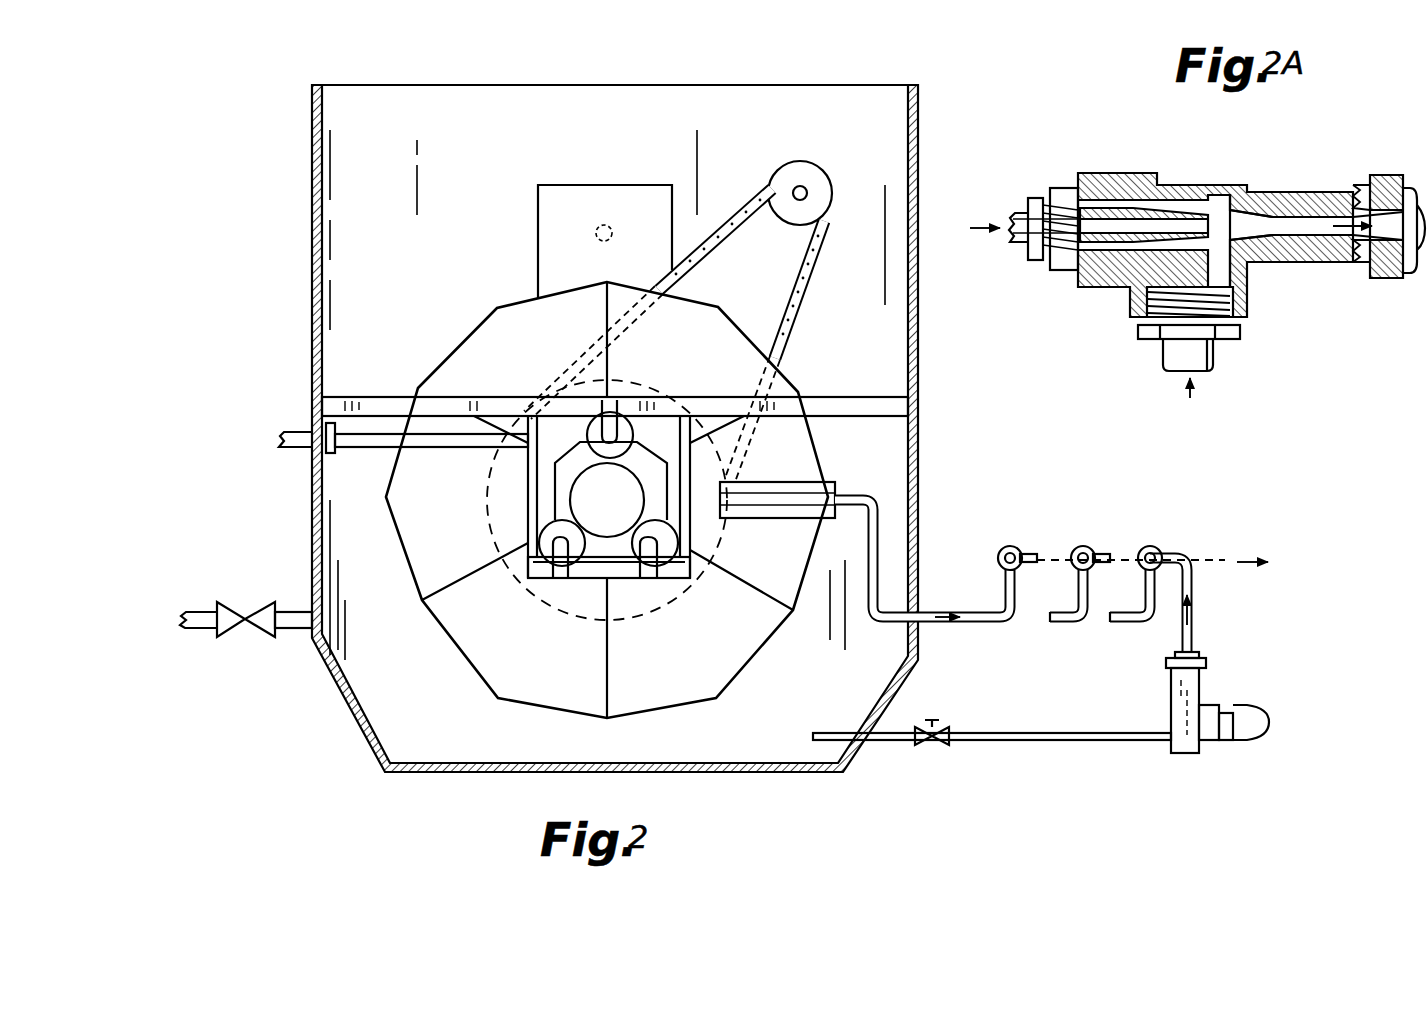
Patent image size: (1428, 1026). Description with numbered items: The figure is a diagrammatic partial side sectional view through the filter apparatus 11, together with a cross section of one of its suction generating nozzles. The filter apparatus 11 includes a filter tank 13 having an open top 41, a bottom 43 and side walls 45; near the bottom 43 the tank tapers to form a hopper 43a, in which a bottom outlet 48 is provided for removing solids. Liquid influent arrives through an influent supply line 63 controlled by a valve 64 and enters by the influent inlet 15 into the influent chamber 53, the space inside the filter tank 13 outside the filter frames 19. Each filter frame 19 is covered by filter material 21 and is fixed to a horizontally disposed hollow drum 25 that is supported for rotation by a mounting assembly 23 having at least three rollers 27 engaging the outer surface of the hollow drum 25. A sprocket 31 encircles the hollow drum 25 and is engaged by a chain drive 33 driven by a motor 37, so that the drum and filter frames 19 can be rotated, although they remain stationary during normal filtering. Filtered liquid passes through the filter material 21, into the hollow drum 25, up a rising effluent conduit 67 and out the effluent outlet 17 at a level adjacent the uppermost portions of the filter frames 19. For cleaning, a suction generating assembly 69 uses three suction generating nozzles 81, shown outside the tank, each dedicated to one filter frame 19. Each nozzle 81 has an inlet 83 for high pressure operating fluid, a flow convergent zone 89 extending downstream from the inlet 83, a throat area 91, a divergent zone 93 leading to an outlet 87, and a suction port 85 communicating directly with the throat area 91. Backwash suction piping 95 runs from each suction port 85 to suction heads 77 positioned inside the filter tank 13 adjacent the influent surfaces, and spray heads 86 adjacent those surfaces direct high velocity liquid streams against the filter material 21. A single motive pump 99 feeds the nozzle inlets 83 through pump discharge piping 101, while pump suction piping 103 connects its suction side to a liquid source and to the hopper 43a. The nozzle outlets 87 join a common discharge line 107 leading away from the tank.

In FIG. 2, the filter apparatus 11 is at (212, 178).
In FIG. 2, the filter tank 13 is at (280, 370).
In FIG. 2, the influent inlet 15 is at (300, 630).
In FIG. 2, the effluent outlet 17 is at (607, 224).
In FIG. 2, the filter frame 19 is at (463, 652).
In FIG. 2, the filter material 21 is at (555, 653).
In FIG. 2, the mounting assembly 23 is at (633, 592).
In FIG. 2, the hollow drum 25 is at (623, 514).
In FIG. 2, the rollers 27 is at (676, 545).
In FIG. 2, the sprocket 31 is at (487, 497).
In FIG. 2, the chain drive 33 is at (808, 286).
In FIG. 2, the motor 37 is at (801, 186).
In FIG. 2, the open top 41 is at (421, 85).
In FIG. 2, the bottom 43 is at (732, 775).
In FIG. 2, the hopper 43a is at (762, 737).
In FIG. 2, the side walls 45 is at (320, 272).
In FIG. 2, the bottom outlet 48 is at (897, 745).
In FIG. 2, the influent chamber 53 is at (328, 630).
In FIG. 2, the influent supply line 63 is at (180, 625).
In FIG. 2, the valve 64 is at (240, 603).
In FIG. 2, the rising effluent conduit 67 is at (538, 218).
In FIG. 2, the suction generating assembly 69 is at (1203, 482).
In FIG. 2, the suction heads 77 is at (790, 482).
In FIG. 2, the suction generating nozzle 81 is at (1000, 553).
In FIG. 2A, the suction generating nozzle 81 is at (1303, 303).
In FIG. 2A, the inlet 83 is at (1062, 268).
In FIG. 2A, the suction port 85 is at (1150, 302).
In FIG. 2, the drive shaft pipe 86 is at (375, 447).
In FIG. 2A, the outlet 87 is at (1372, 248).
In FIG. 2A, the flow convergent zone 89 is at (1113, 208).
In FIG. 2A, the throat area 91 is at (1210, 215).
In FIG. 2A, the divergent zone 93 is at (1305, 216).
In FIG. 2, the backwash suction piping 95 is at (972, 622).
In FIG. 2A, the backwash suction piping 95 is at (1165, 353).
In FIG. 2, the motive pump 99 is at (1179, 692).
In FIG. 2, the pump discharge piping 101 is at (1191, 598).
In FIG. 2A, the pump discharge piping 101 is at (1018, 210).
In FIG. 2, the pump suction piping 103 is at (1040, 742).
In FIG. 2, the common discharge line 107 is at (1050, 550).
In FIG. 2A, the common discharge line 107 is at (1410, 195).